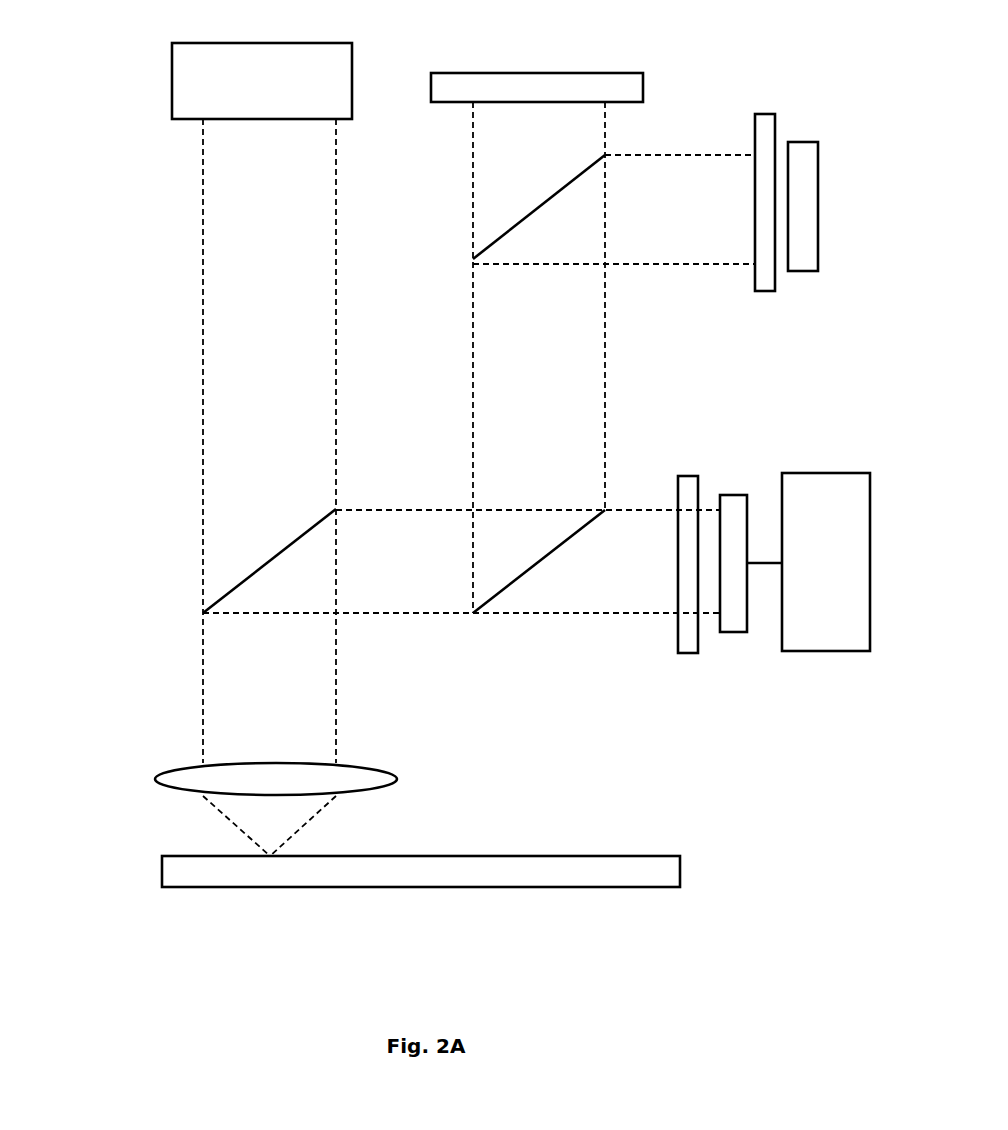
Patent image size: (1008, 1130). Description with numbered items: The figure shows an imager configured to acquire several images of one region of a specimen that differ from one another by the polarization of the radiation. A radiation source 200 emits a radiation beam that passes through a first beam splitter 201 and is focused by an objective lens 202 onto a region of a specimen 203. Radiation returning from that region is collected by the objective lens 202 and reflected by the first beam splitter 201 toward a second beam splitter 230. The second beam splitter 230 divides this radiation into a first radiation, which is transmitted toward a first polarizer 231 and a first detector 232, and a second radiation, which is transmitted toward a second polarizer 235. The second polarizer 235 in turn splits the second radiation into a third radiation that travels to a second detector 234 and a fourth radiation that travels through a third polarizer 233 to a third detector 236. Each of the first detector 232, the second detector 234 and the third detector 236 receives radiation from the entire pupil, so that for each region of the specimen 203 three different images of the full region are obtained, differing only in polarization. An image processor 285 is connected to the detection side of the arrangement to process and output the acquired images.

The radiation source 200 is at (262, 81).
The first beam splitter 201 is at (235, 587).
The objective lens 202 is at (232, 763).
The specimen 203 is at (193, 887).
The second beam splitter 230 is at (520, 588).
The first polarizer 231 is at (678, 653).
The first detector 232 is at (733, 632).
The third polarizer 233 is at (755, 291).
The second detector 234 is at (588, 73).
The second polarizer 235 is at (498, 240).
The third detector 236 is at (808, 271).
The image processor 285 is at (808, 562).